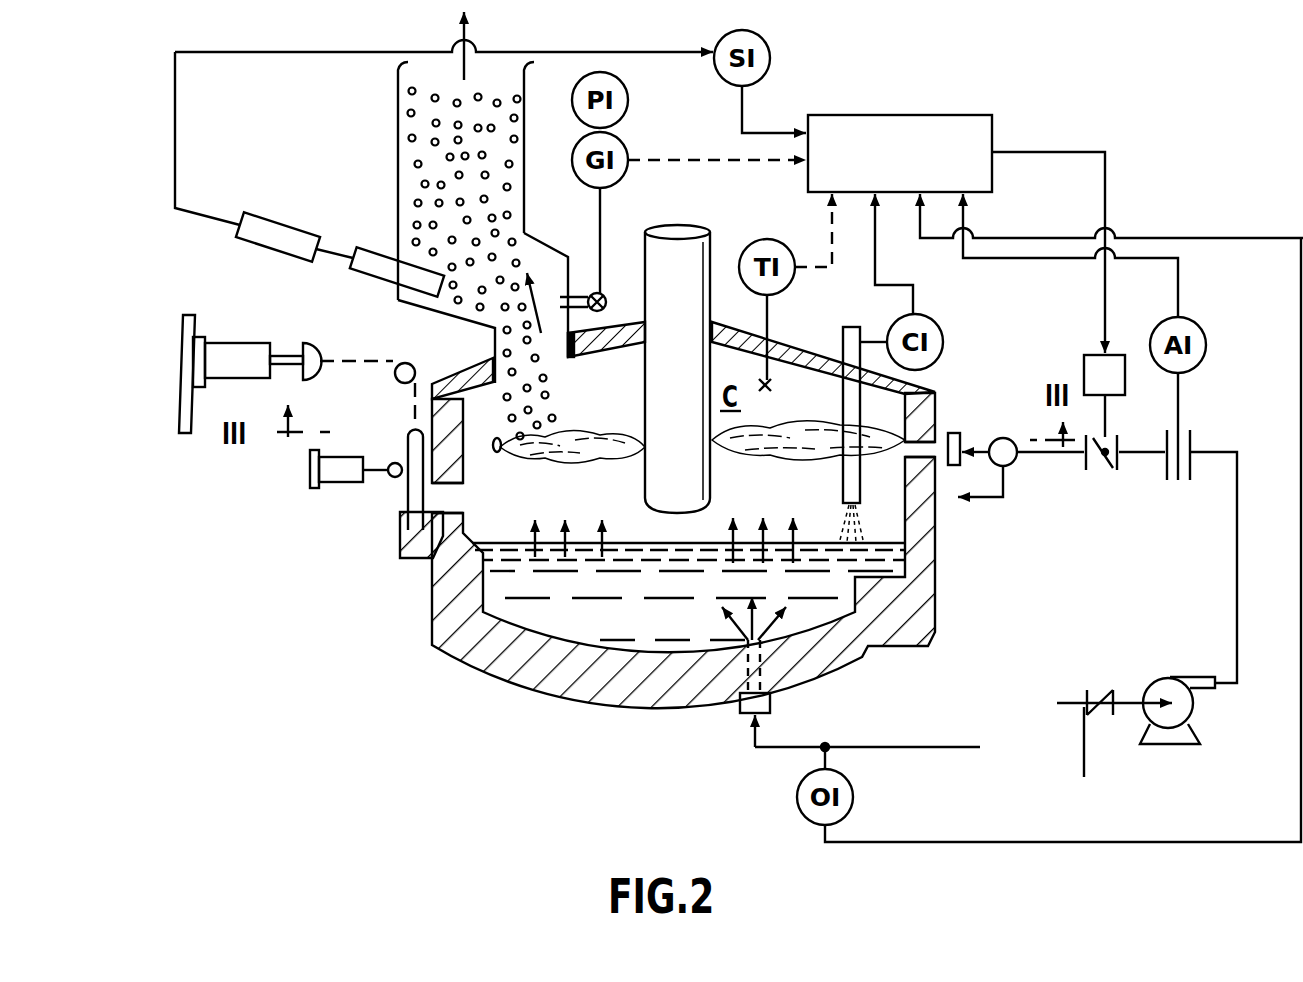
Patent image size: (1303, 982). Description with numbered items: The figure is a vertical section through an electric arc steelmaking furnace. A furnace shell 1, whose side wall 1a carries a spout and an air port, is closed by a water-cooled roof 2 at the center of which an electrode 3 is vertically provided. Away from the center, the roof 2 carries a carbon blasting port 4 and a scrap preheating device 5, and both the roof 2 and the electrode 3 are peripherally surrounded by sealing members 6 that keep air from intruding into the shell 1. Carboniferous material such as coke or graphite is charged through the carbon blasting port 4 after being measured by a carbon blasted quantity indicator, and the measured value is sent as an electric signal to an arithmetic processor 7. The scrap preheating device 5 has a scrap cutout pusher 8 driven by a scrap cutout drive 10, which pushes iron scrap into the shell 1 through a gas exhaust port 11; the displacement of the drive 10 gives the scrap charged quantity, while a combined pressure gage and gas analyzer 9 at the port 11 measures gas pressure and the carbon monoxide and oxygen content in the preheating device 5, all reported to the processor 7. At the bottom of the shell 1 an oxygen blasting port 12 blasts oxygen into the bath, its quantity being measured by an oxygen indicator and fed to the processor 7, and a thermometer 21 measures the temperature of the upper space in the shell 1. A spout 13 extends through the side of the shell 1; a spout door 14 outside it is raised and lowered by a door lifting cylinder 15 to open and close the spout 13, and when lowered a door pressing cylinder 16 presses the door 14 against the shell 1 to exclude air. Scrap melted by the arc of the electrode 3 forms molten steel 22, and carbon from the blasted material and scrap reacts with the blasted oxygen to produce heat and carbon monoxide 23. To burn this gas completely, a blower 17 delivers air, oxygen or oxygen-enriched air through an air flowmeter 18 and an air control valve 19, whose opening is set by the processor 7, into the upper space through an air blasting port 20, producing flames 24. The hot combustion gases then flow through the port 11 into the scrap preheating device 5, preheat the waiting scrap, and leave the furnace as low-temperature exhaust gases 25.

The furnace shell 1 is at (730, 550).
The vessel side wall 1a is at (937, 505).
The water-cooled roof 2 is at (795, 348).
The electrode 3 is at (672, 240).
The carbon blasting port 4 is at (848, 325).
The scrap preheating device 5 is at (396, 99).
The sealing members 6 is at (730, 320).
The arithmetic processor 7 is at (897, 113).
The scrap cutout pusher 8 is at (370, 250).
The combined pressure gage and gas analyzer 9 is at (603, 293).
The scrap cutout drive 10 is at (283, 214).
The gas exhaust port 11 is at (553, 345).
The oxygen blasting port 12 is at (772, 700).
The spout 13 is at (460, 498).
The spout door 14 is at (405, 500).
The door lifting cylinder 15 is at (238, 350).
The door pressing cylinder 16 is at (310, 468).
The blower 17 is at (1183, 738).
The air flowmeter 18 is at (1183, 485).
The air control valve 19 is at (1105, 475).
The air blasting port 20 is at (497, 437).
The thermometer 21 is at (771, 388).
The molten steel 22 is at (608, 613).
The carbon monoxide 23 is at (533, 537).
The flames 24 is at (588, 458).
The low-temperature exhaust gases 25 is at (472, 45).